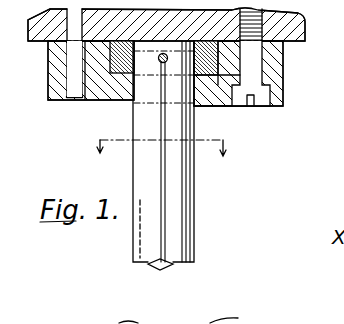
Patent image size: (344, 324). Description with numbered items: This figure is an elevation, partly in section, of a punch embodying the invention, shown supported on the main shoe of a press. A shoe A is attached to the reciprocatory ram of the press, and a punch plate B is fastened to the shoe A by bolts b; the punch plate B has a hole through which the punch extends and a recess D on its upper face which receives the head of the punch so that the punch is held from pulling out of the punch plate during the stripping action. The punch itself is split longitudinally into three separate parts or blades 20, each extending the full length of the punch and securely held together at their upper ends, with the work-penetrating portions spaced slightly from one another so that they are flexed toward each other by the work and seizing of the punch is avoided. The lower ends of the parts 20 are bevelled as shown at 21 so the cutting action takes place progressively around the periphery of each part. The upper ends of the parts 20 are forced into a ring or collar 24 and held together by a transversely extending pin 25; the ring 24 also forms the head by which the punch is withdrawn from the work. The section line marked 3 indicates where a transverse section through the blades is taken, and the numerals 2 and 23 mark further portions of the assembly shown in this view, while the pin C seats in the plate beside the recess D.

The shoe A is at (303, 27).
The punch plate B is at (284, 72).
The bolts b is at (263, 106).
The pin C is at (75, 70).
The recess D is at (122, 70).
The bushing 2 is at (224, 53).
The section line 3 is at (165, 161).
The parts or blades 20 is at (152, 232).
The bevelled lower ends 21 is at (150, 268).
The rod 23 is at (181, 82).
The ring or collar 24 is at (212, 106).
The transversely extending pin 25 is at (161, 62).